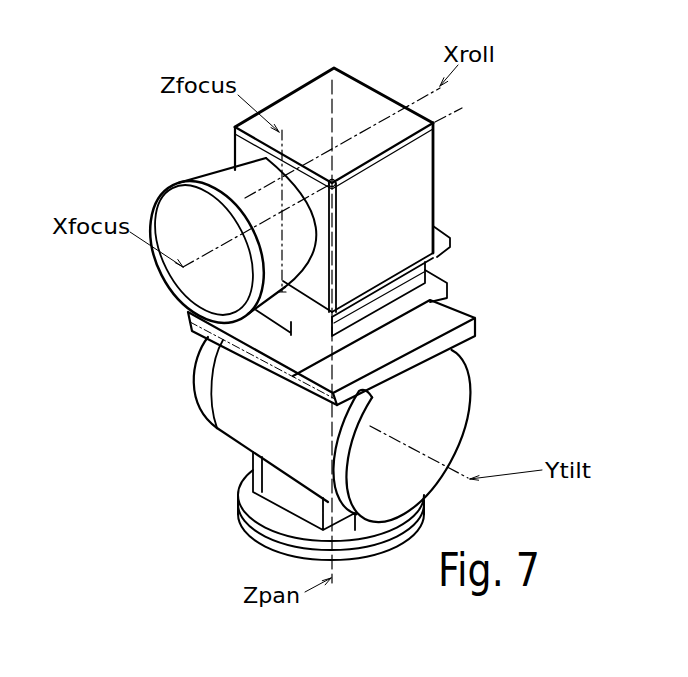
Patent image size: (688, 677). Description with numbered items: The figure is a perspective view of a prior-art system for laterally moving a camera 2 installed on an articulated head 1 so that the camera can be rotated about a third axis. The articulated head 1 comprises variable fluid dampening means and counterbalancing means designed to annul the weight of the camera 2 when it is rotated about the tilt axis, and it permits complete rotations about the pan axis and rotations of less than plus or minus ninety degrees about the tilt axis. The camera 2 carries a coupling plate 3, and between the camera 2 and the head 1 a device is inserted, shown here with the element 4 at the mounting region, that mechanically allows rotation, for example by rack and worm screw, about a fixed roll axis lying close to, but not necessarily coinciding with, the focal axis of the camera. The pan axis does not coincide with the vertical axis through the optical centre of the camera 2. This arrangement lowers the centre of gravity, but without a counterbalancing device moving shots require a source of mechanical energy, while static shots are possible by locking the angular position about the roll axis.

The articulated head 1 is at (196, 410).
The camera 2 is at (160, 188).
The coupling plate 3 is at (450, 230).
The mounting bracket tab 4 is at (448, 282).